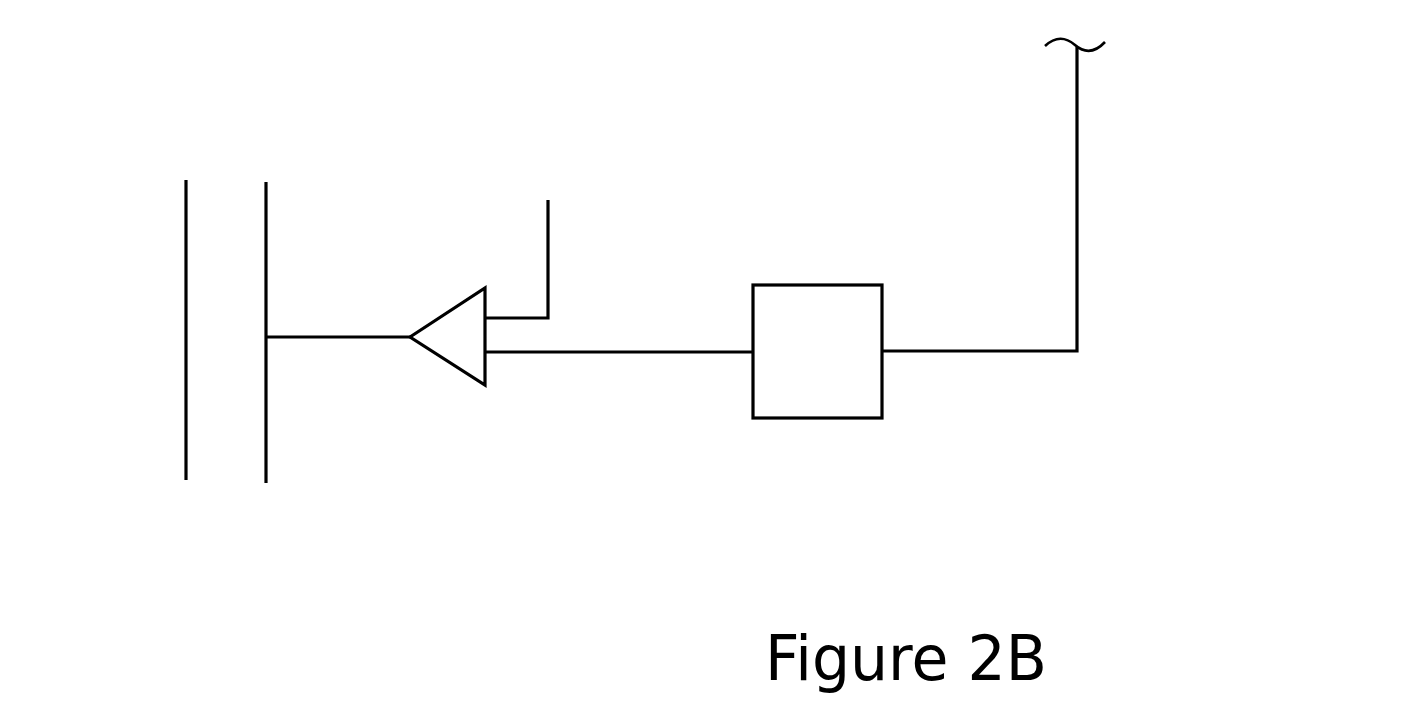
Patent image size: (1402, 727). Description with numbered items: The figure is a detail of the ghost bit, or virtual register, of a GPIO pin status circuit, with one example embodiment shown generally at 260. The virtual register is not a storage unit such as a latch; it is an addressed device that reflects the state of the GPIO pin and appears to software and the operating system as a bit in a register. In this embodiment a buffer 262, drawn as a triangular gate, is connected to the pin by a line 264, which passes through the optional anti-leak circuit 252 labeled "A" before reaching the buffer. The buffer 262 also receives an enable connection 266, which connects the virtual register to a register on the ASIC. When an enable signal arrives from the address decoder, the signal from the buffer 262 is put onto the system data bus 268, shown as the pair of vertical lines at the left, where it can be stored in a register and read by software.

The anti-leak circuit 252 is at (820, 283).
The ghost bit embodiment 260 is at (1262, 110).
The buffer 262 is at (450, 368).
The line 264 is at (572, 358).
The enable connection 266 is at (548, 262).
The system data bus 268 is at (186, 318).